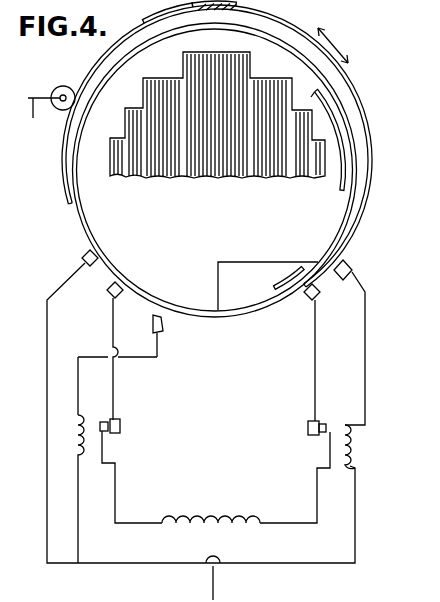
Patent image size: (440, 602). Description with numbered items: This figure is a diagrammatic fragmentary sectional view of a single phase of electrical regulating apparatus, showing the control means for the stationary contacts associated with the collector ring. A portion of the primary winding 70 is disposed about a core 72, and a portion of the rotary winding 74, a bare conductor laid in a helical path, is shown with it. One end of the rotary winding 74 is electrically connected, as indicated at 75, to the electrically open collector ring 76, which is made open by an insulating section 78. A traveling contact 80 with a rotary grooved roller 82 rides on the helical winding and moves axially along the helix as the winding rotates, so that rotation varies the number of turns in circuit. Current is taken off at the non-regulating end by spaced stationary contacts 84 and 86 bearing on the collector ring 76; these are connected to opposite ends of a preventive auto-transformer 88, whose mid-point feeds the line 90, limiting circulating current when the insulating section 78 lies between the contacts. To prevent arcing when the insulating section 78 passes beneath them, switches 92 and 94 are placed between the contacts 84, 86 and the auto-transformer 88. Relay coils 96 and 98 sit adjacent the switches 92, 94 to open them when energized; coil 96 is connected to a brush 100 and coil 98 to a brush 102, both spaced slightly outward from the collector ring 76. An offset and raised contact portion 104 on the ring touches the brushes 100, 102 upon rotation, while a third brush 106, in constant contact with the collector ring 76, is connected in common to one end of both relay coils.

The primary winding 70 is at (318, 92).
The core 72 is at (308, 150).
The rotary winding 74 is at (346, 108).
The electrical connection 75 is at (217, 277).
The collector ring 76 is at (366, 203).
The insulating section 78 is at (252, 8).
The traveling contact 80 is at (41, 120).
The rotary grooved roller 82 is at (69, 85).
The stationary contact 84 is at (108, 292).
The stationary contact 86 is at (318, 298).
The preventive auto-transformer 88 is at (237, 520).
The line 90 is at (220, 589).
The switch 92 is at (116, 420).
The switch 94 is at (318, 421).
The relay coil 96 is at (80, 442).
The relay coil 98 is at (350, 446).
The brush 100 is at (164, 325).
The brush 102 is at (352, 266).
The raised contact portion 104 is at (144, 23).
The third brush 106 is at (83, 256).